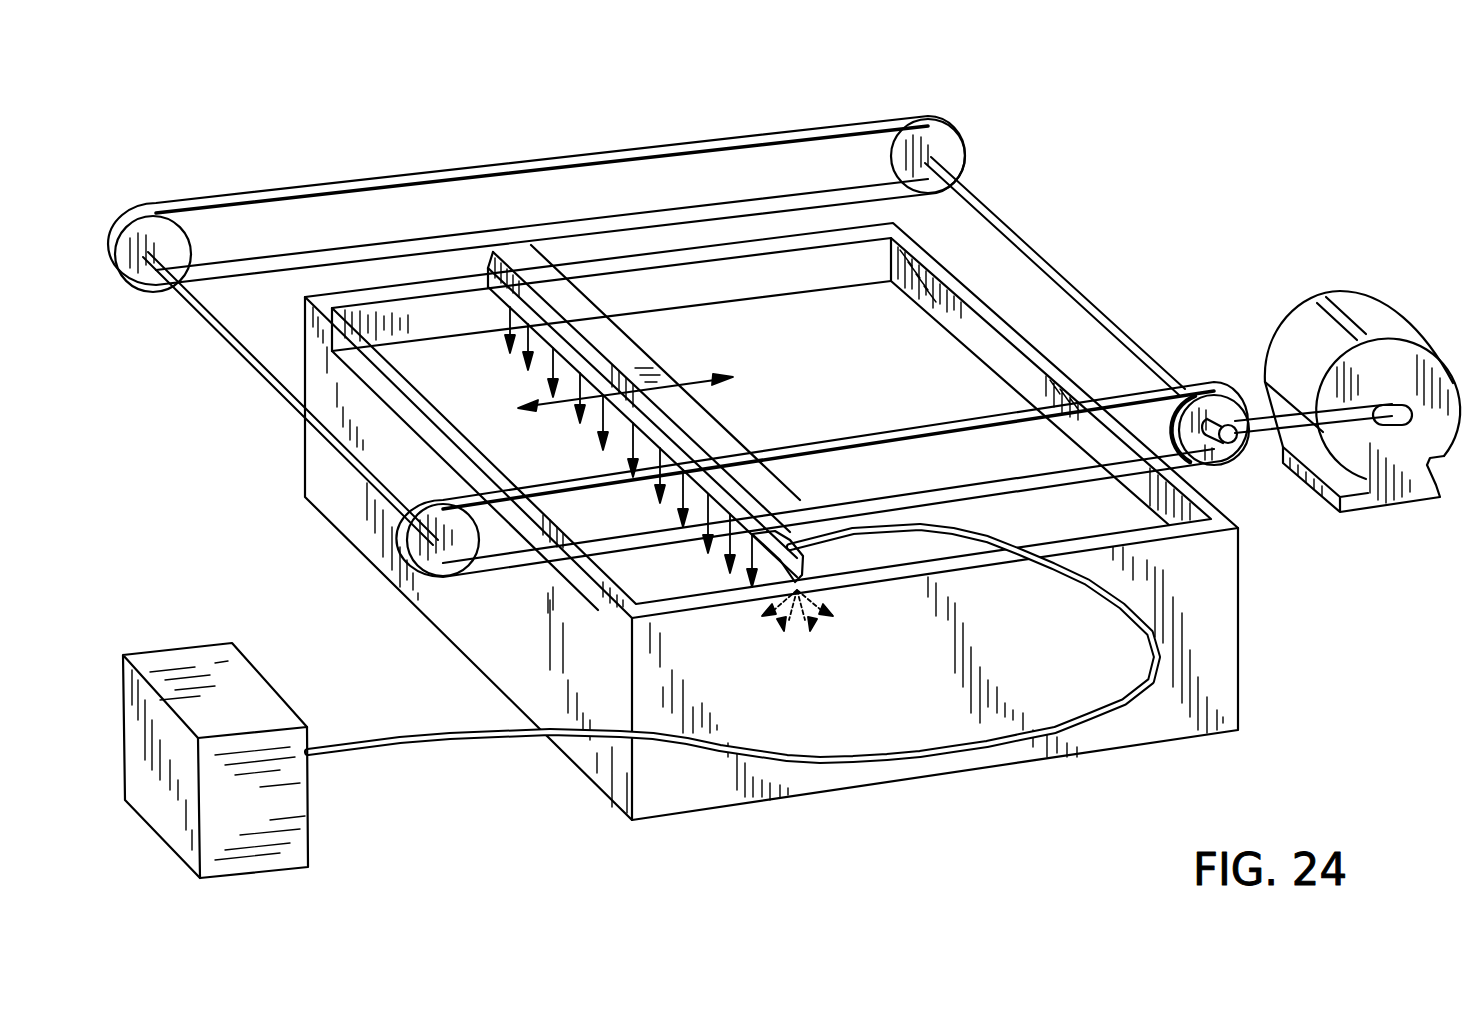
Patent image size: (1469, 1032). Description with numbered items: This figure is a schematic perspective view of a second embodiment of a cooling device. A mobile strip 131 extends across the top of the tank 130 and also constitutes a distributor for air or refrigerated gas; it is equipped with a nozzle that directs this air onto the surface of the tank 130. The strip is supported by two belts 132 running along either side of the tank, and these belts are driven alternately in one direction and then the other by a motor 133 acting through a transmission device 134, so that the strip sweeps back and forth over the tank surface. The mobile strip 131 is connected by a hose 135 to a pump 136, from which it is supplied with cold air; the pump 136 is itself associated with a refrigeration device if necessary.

The tank 130 is at (693, 790).
The mobile strip 131 is at (529, 263).
The belts 132 is at (797, 202).
The motor 133 is at (1321, 332).
The transmission device 134 is at (1258, 384).
The hose 135 is at (400, 742).
The pump 136 is at (277, 825).